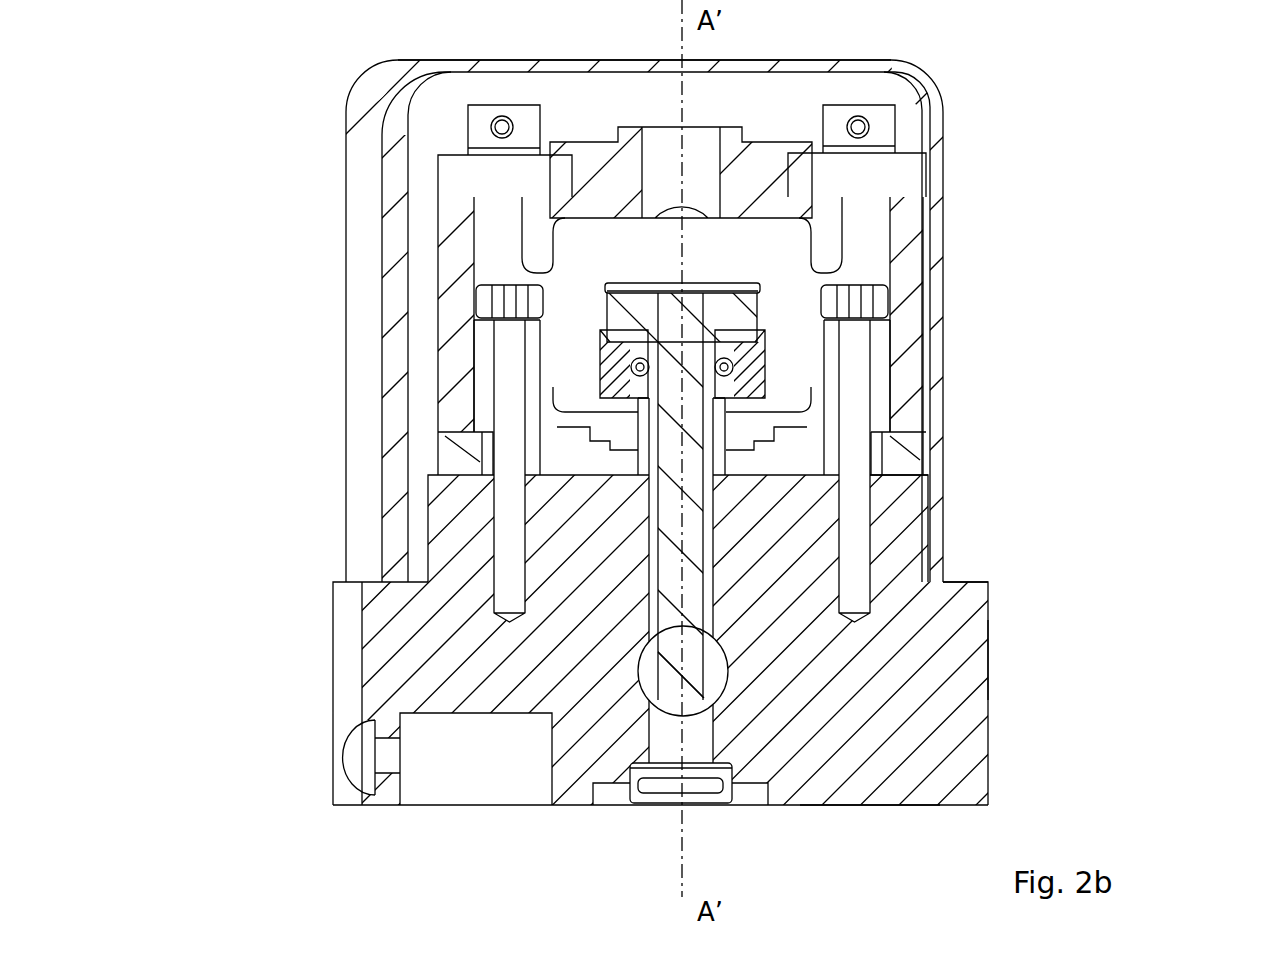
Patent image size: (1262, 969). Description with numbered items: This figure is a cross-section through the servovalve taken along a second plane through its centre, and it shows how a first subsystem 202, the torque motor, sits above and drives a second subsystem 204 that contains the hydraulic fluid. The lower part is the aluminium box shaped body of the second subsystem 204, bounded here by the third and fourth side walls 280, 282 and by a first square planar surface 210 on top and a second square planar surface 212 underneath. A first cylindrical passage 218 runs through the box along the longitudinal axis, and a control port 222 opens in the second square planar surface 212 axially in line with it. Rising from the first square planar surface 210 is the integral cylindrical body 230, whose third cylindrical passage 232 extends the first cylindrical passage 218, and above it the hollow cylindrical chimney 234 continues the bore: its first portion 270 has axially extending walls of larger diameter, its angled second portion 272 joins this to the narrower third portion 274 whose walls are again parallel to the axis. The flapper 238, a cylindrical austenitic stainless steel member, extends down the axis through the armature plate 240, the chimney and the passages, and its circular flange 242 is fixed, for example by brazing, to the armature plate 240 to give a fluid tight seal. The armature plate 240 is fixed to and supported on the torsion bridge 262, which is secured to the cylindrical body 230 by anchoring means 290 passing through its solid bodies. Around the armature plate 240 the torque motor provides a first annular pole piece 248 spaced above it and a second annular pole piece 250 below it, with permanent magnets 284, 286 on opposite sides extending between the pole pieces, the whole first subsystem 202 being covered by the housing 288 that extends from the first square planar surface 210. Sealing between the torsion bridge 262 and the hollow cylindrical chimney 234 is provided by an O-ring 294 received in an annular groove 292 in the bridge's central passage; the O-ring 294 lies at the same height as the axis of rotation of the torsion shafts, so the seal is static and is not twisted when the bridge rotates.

The first subsystem 202 is at (950, 264).
The second subsystem 204 is at (1078, 580).
The first square planar surface 210 is at (967, 577).
The second square planar surface 212 is at (870, 800).
The first cylindrical passage 218 is at (682, 740).
The control port 222 is at (685, 800).
The cylindrical body 230 is at (440, 538).
The third cylindrical passage 232 is at (713, 592).
The hollow cylindrical chimney 234 is at (716, 435).
The flapper 238 is at (747, 580).
The armature plate 240 is at (642, 313).
The circular flange 242 is at (648, 281).
The first annular pole piece 248 is at (897, 170).
The second annular pole piece 250 is at (915, 443).
The torsion bridge 262 is at (631, 365).
The first portion 270 is at (733, 438).
The second portion 272 is at (722, 392).
The third portion 274 is at (733, 368).
The third side wall 280 is at (360, 635).
The fourth side wall 282 is at (985, 652).
The permanent magnet 284 is at (443, 263).
The permanent magnet 286 is at (905, 252).
The housing 288 is at (905, 76).
The anchoring means 290 is at (640, 367).
The annular groove 292 is at (510, 369).
The O-ring 294 is at (640, 377).